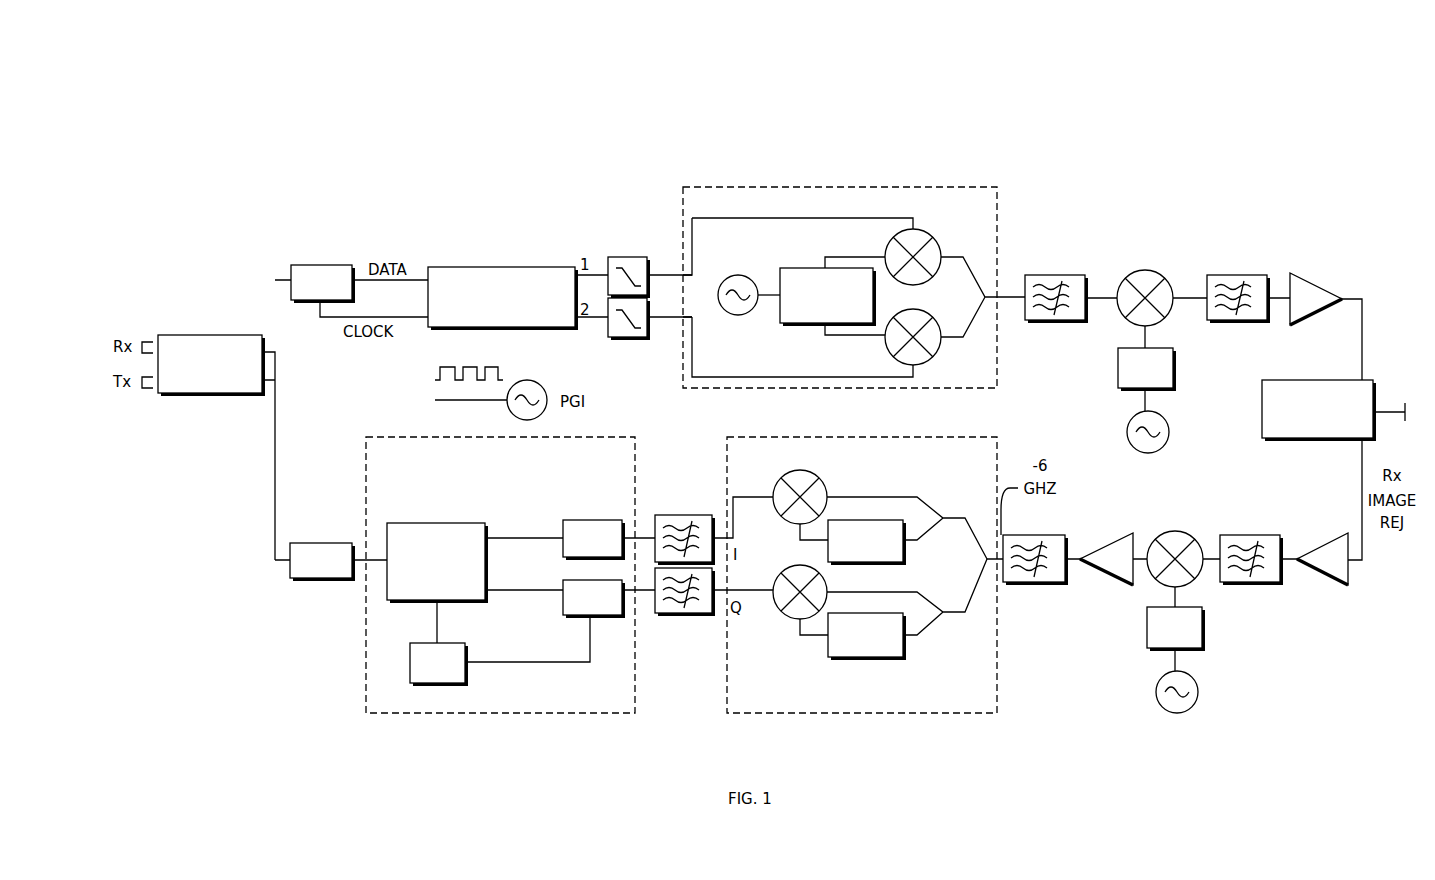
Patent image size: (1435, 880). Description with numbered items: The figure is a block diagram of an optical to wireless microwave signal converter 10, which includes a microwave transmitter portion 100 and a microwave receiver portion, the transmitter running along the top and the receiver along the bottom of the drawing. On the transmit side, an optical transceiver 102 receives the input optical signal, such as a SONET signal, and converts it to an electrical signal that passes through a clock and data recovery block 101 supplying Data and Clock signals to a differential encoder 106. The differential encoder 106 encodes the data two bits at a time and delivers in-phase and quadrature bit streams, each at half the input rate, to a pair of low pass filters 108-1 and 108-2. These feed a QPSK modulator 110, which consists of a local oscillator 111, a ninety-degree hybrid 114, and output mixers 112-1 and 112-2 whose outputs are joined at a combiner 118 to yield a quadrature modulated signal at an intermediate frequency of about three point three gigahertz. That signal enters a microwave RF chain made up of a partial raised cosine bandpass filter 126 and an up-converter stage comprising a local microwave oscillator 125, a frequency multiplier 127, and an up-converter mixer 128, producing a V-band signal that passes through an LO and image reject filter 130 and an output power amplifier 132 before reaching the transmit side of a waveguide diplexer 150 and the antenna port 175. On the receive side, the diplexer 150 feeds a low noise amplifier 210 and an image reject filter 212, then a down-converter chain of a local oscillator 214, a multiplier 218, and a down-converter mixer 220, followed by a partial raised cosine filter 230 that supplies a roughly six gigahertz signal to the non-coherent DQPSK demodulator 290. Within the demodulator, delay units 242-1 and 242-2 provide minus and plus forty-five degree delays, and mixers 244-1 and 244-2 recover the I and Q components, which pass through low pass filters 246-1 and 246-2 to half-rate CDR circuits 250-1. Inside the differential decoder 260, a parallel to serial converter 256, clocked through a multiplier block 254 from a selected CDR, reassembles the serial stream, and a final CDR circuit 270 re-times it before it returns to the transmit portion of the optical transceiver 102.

The optical to wireless microwave signal converter 10 is at (846, 77).
The microwave transmitter portion 100 is at (1214, 193).
The clock and data recovery (CDR) 101 is at (300, 265).
The optical transceiver 102 is at (176, 335).
The differential encoder 106 is at (467, 267).
The low pass filter 108-1 is at (637, 257).
The low pass filter 108-2 is at (637, 337).
The QPSK modulator 110 is at (912, 209).
The local oscillator 111 is at (758, 273).
The output mixer 112-1 is at (914, 229).
The output mixer 112-2 is at (914, 365).
The 90-degree hybrid 114 is at (802, 268).
The combiner 118 is at (967, 250).
The local microwave oscillator 125 is at (1127, 433).
The partial raised cosine bandpass filter 126 is at (1035, 275).
The frequency multiplier 127 is at (1123, 388).
The up-converter mixer 128 is at (1143, 270).
The LO and image reject filter 130 is at (1237, 275).
The output power amplifier 132 is at (1313, 273).
The waveguide diplexer 150 is at (1262, 432).
The antenna port 175 is at (1385, 410).
The low noise amplifier 210 is at (1345, 533).
The image reject filter 212 is at (1090, 540).
The local oscillator 214 is at (1198, 690).
The multiplier 218 is at (1203, 634).
The down-converter mixer 220 is at (1175, 531).
The partial raised cosine filter 230 is at (1043, 535).
The delay unit 242-1 is at (828, 548).
The delay unit 242-2 is at (903, 657).
The mixer 244-1 is at (826, 480).
The mixer 244-2 is at (787, 615).
The low pass filter 246-1 is at (655, 515).
The low pass filter 246-2 is at (655, 613).
The CDR circuit 250-1 is at (568, 520).
The X2 clock multiplier 254 is at (443, 683).
The parallel to serial converter 256 is at (450, 523).
The differential decoder 260 is at (620, 462).
The final CDR circuit 270 is at (318, 580).
The demodulator 290 is at (920, 463).